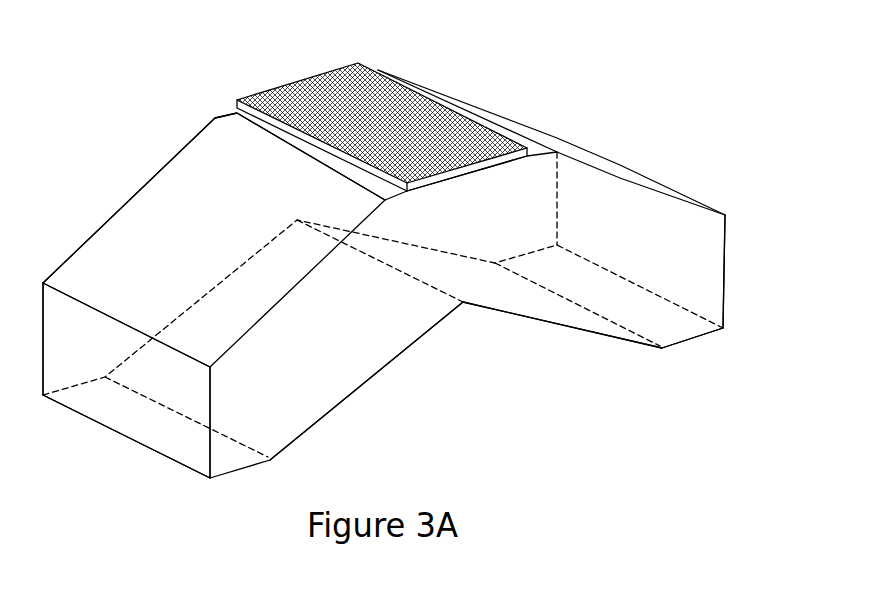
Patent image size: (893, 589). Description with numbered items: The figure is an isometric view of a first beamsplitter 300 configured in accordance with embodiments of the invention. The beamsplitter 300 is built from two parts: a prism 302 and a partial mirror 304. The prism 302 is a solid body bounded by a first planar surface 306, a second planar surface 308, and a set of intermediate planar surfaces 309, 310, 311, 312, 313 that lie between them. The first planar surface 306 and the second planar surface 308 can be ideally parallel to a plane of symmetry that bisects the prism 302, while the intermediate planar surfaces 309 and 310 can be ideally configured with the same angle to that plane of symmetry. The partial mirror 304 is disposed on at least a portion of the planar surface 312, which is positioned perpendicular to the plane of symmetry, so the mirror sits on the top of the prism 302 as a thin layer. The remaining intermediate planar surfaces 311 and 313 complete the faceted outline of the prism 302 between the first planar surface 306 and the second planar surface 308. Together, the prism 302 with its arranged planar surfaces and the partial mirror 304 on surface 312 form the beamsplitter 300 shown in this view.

The first beamsplitter 300 is at (408, 273).
The prism 302 is at (382, 68).
The partial mirror 304 is at (308, 82).
The first planar surface 306 is at (187, 447).
The second planar surface 308 is at (714, 285).
The intermediate planar surface 309 is at (322, 414).
The intermediate planar surface 310 is at (538, 310).
The intermediate planar surface 311 is at (107, 227).
The intermediate planar surface 312 is at (238, 110).
The intermediate planar surface 313 is at (545, 140).